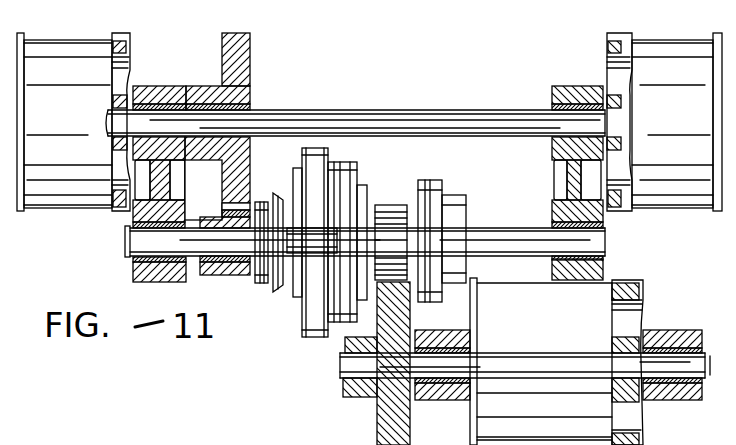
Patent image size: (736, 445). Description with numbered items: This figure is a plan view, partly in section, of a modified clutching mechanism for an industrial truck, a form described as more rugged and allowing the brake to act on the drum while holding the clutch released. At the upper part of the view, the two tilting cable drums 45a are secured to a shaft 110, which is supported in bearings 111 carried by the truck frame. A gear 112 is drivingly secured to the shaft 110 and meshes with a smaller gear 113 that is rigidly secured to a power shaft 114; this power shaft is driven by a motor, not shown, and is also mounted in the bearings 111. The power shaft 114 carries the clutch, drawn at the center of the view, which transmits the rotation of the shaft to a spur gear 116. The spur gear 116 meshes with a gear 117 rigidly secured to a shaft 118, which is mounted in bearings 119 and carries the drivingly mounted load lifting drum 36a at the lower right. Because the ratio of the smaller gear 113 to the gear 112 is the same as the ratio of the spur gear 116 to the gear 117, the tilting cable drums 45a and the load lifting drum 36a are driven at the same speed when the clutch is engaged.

The tilting cable drums 45a is at (91, 50).
The shaft 110 is at (524, 118).
The bearings 111 is at (167, 88).
The gear 112 is at (245, 75).
The smaller gear 113 is at (226, 268).
The power shaft 114 is at (130, 243).
The spur gear 116 is at (394, 205).
The gear 117 is at (386, 408).
The shaft 118 is at (345, 367).
The bearings 119 is at (445, 396).
The load lifting drum 36a is at (556, 361).